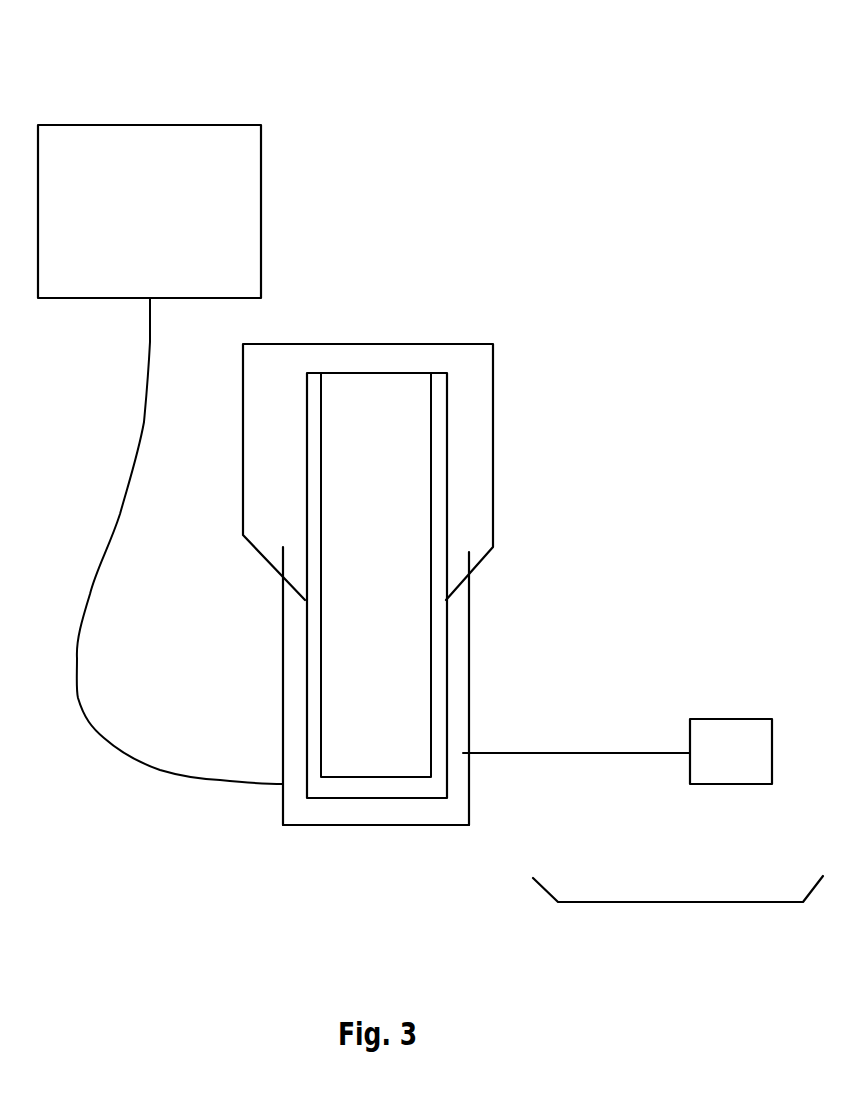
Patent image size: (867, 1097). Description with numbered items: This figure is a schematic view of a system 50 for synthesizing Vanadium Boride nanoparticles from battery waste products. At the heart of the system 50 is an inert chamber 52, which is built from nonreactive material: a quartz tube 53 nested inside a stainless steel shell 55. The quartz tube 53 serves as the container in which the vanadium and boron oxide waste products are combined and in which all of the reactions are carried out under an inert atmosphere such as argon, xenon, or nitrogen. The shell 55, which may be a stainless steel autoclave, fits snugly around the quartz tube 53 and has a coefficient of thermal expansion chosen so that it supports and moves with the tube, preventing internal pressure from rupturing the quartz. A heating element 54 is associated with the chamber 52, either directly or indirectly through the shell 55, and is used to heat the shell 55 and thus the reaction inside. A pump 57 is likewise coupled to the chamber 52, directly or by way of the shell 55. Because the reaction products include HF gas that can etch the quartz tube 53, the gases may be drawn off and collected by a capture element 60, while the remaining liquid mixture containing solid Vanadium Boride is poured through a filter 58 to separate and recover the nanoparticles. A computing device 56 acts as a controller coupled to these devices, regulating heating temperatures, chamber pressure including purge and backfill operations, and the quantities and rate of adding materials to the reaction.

The system 50 is at (588, 73).
The inert chamber 52 is at (460, 618).
The quartz tube 53 is at (432, 678).
The heating element 54 is at (412, 825).
The shell 55 is at (447, 725).
The computing device 56 is at (261, 215).
The pump 57 is at (772, 750).
The filter 58 is at (702, 902).
The capture element 60 is at (493, 405).